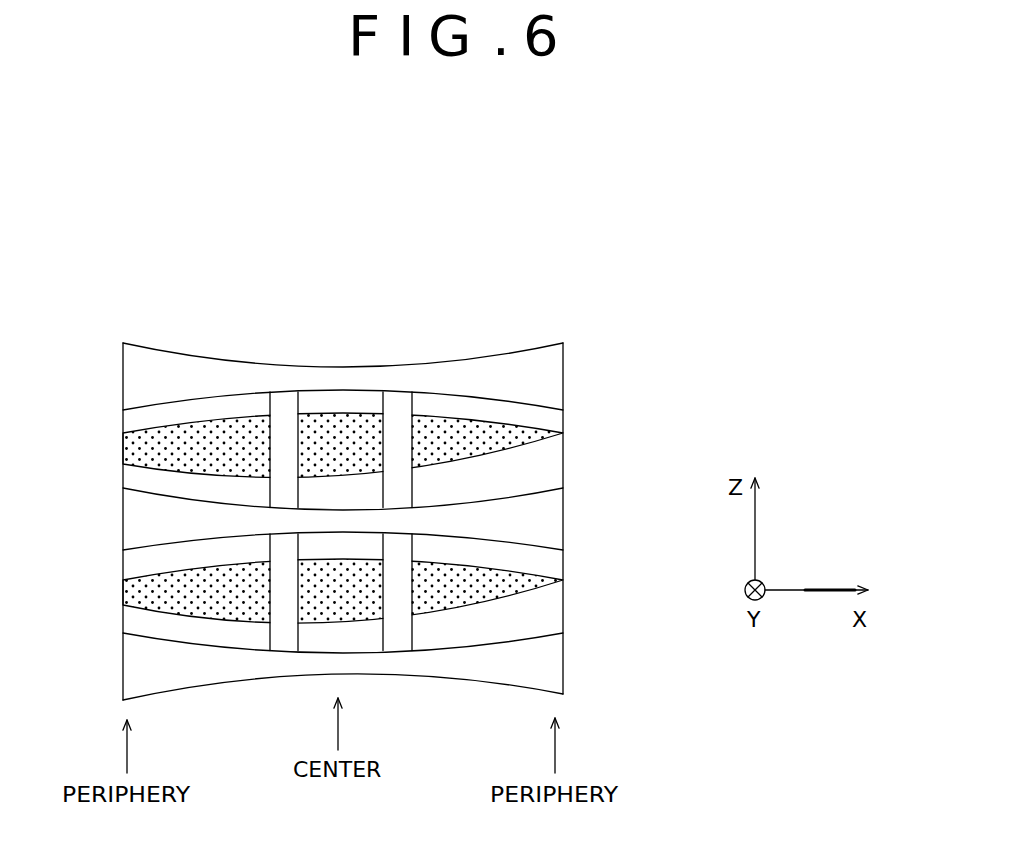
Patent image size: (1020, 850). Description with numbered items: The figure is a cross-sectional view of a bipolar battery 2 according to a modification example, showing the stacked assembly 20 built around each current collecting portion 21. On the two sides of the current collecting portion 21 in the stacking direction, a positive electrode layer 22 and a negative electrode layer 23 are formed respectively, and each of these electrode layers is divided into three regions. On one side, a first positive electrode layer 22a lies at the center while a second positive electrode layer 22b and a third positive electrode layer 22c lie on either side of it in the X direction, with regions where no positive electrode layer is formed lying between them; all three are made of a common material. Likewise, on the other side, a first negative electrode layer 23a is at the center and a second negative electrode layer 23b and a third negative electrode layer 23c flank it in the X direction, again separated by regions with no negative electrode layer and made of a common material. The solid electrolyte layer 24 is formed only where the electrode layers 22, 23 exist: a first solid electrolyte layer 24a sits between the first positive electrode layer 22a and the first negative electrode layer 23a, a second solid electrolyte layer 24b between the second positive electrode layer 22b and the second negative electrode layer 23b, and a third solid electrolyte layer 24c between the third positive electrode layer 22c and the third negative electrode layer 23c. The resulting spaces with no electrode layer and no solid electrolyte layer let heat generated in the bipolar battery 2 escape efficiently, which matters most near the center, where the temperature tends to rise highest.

The bipolar battery 2 is at (528, 323).
The laminated structure 20 is at (657, 488).
The current collecting portion 21 is at (137, 375).
The positive electrode layer 22 is at (568, 472).
The first positive electrode layer 22a is at (338, 497).
The second positive electrode layer 22b is at (167, 493).
The third positive electrode layer 22c is at (513, 477).
The negative electrode layer 23 is at (568, 412).
The first negative electrode layer 23a is at (333, 545).
The second negative electrode layer 23b is at (133, 572).
The third negative electrode layer 23c is at (530, 563).
The solid electrolyte layer 24 is at (568, 445).
The first solid electrolyte layer 24a is at (333, 615).
The second solid electrolyte layer 24b is at (190, 607).
The third solid electrolyte layer 24c is at (453, 613).